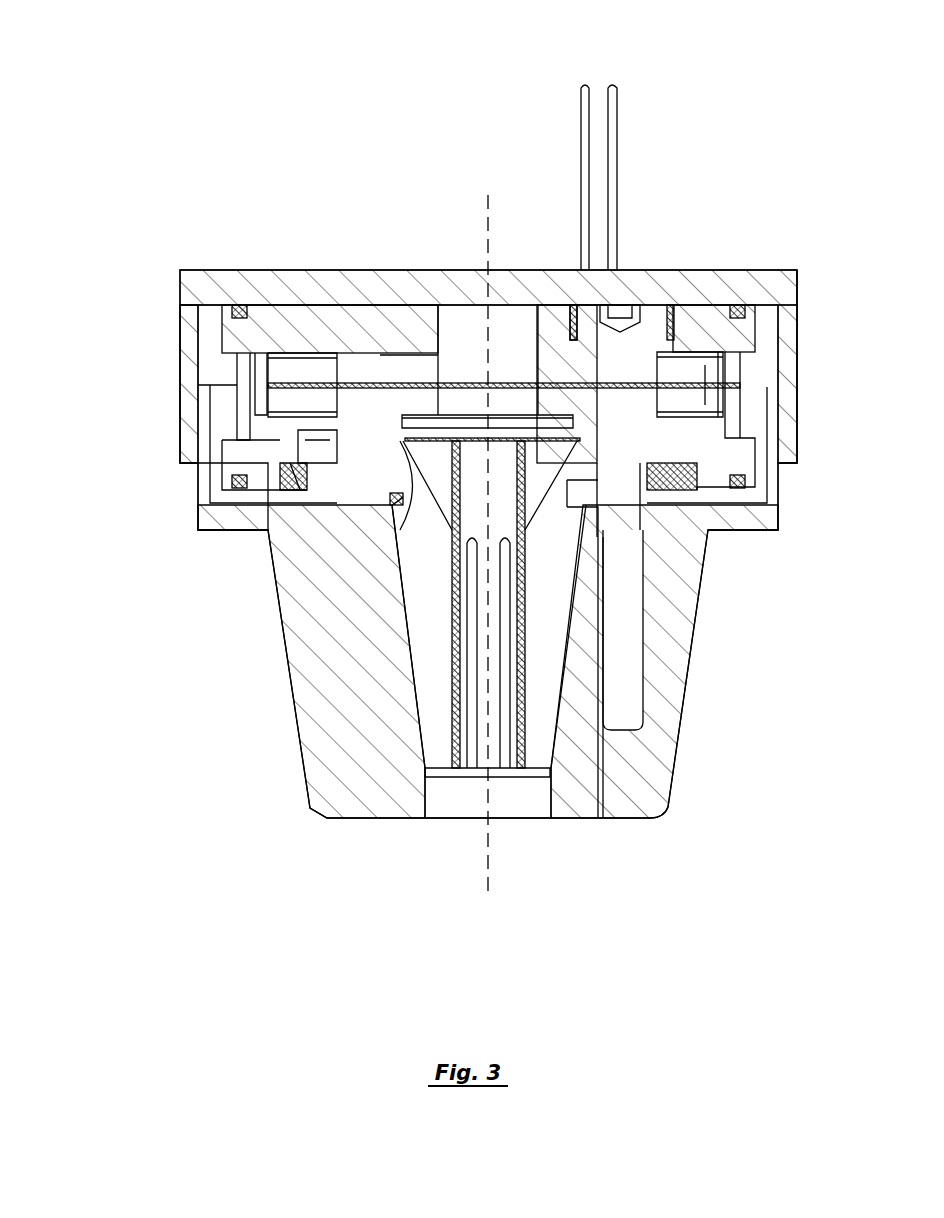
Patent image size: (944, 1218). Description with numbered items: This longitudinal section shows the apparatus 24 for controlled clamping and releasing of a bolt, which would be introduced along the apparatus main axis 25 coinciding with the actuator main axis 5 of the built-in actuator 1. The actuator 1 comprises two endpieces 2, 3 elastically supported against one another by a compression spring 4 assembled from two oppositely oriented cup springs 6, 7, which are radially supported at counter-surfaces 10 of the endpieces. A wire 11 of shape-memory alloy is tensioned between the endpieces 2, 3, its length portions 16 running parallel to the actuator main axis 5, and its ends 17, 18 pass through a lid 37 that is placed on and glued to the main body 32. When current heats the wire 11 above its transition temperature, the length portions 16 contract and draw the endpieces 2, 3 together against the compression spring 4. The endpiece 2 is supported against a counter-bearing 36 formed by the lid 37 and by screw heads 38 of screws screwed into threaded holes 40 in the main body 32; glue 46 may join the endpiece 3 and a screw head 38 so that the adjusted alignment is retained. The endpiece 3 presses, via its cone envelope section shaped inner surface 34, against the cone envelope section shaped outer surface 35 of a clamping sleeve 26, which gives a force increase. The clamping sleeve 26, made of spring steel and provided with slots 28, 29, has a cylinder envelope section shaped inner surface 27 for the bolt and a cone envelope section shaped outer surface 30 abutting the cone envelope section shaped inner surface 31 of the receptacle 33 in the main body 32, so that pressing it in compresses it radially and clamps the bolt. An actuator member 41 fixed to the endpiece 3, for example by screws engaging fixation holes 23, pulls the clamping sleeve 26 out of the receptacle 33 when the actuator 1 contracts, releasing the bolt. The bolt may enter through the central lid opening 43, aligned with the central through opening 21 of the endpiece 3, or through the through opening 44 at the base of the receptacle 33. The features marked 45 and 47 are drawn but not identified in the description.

The actuator 1 is at (760, 322).
The endpiece 2 is at (720, 303).
The endpiece 3 is at (762, 478).
The compression spring 4 is at (733, 386).
The actuator main axis 5 is at (485, 195).
The cup spring 6 is at (697, 342).
The cup spring 7 is at (712, 402).
The counter-surface 10 is at (450, 290).
The wire 11 is at (622, 105).
The length portions 16 is at (232, 373).
The end of the wire 17 is at (583, 84).
The end of the wire 18 is at (614, 84).
The central through opening 21 is at (523, 400).
The fixation holes 23 is at (318, 424).
The apparatus 24 is at (733, 112).
The apparatus main axis 25 is at (487, 893).
The clamping sleeve 26 is at (402, 652).
The inner surface 27 is at (505, 523).
The slot 28 is at (490, 648).
The slot 29 is at (505, 735).
The outer surface 30 is at (593, 545).
The inner surface 31 is at (533, 728).
The main body 32 is at (315, 700).
The receptacle 33 is at (458, 770).
The cone envelope section shaped inner surface 34 is at (397, 517).
The outer surface 35 is at (585, 432).
The counter-bearing 36 is at (205, 268).
The lid 37 is at (250, 280).
The screw heads 38 is at (652, 323).
The threaded holes 40 is at (623, 740).
The actuator member 41 is at (403, 497).
The central lid opening 43 is at (460, 350).
The through opening 44 is at (517, 802).
The flange 45 is at (207, 532).
The glue 46 is at (668, 308).
The wedge 47 is at (318, 472).